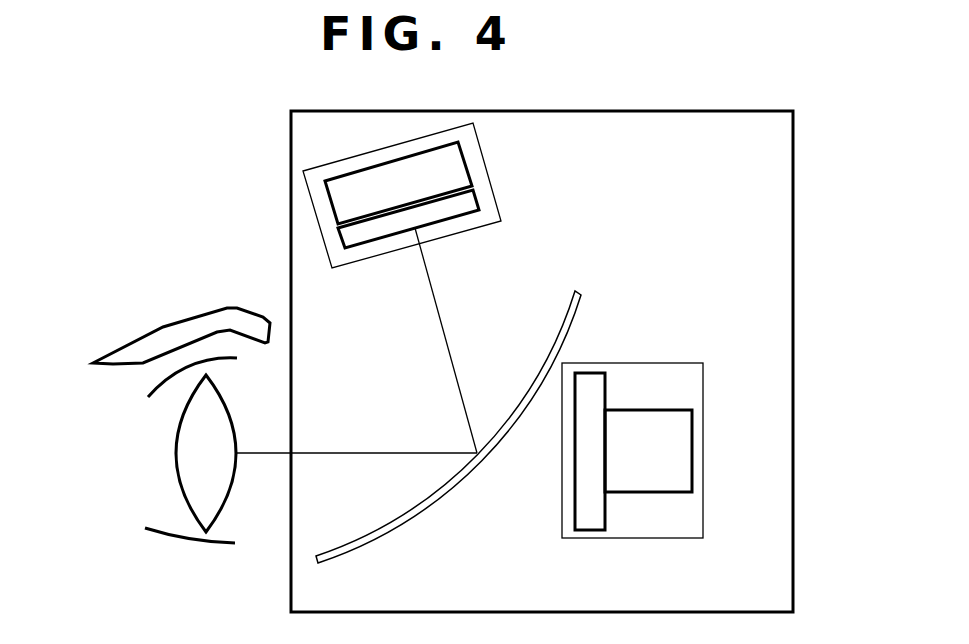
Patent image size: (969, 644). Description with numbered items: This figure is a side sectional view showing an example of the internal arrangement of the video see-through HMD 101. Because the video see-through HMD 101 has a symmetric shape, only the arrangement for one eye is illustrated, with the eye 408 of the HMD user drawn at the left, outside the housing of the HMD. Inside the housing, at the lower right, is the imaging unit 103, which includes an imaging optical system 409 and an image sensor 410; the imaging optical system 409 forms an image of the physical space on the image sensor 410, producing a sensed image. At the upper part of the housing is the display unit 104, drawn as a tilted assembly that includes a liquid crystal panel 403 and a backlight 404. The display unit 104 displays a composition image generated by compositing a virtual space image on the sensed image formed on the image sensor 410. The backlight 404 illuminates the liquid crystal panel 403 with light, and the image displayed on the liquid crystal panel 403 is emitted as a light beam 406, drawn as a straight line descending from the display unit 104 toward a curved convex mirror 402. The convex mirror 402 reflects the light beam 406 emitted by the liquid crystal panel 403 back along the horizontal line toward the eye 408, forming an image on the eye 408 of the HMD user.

The video see-through HMD 101 is at (732, 110).
The imaging unit 103 is at (683, 362).
The display unit 104 is at (488, 227).
The convex mirror 402 is at (403, 530).
The liquid crystal panel 403 is at (472, 208).
The backlight 404 is at (453, 167).
The light beam 406 is at (438, 330).
The eye 408 is at (175, 478).
The imaging optical system 409 is at (692, 485).
The image sensor 410 is at (593, 532).